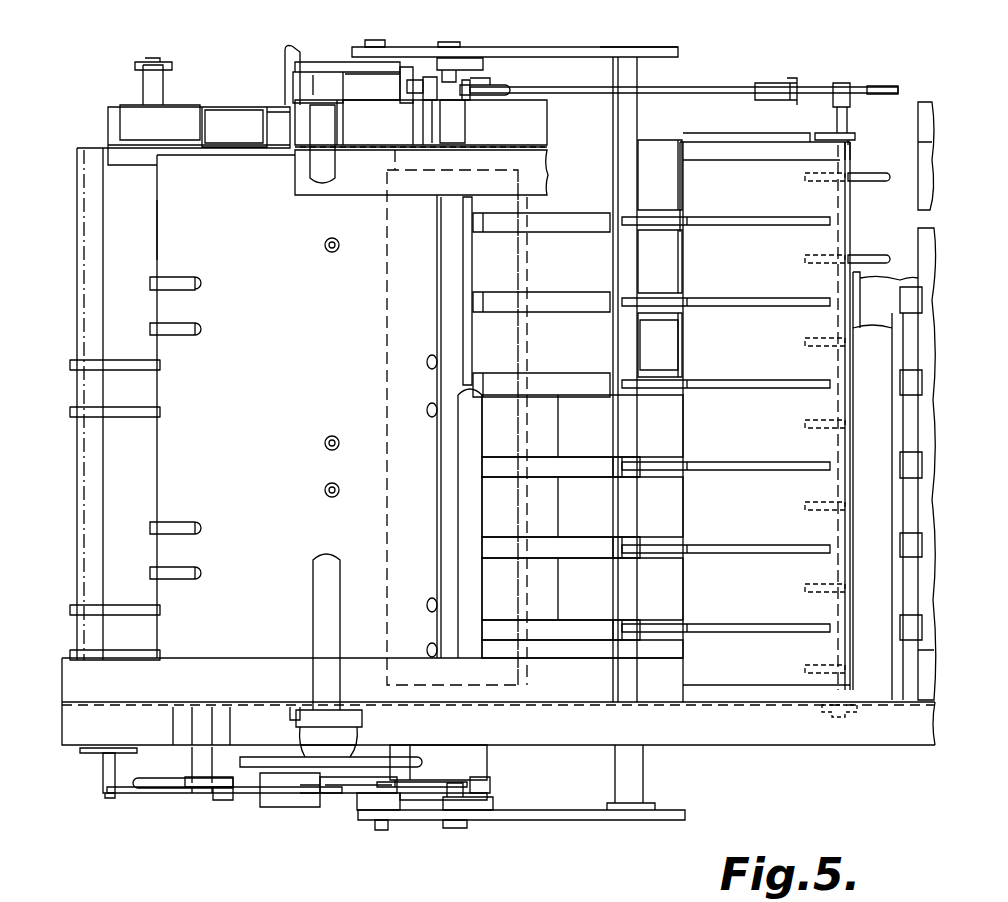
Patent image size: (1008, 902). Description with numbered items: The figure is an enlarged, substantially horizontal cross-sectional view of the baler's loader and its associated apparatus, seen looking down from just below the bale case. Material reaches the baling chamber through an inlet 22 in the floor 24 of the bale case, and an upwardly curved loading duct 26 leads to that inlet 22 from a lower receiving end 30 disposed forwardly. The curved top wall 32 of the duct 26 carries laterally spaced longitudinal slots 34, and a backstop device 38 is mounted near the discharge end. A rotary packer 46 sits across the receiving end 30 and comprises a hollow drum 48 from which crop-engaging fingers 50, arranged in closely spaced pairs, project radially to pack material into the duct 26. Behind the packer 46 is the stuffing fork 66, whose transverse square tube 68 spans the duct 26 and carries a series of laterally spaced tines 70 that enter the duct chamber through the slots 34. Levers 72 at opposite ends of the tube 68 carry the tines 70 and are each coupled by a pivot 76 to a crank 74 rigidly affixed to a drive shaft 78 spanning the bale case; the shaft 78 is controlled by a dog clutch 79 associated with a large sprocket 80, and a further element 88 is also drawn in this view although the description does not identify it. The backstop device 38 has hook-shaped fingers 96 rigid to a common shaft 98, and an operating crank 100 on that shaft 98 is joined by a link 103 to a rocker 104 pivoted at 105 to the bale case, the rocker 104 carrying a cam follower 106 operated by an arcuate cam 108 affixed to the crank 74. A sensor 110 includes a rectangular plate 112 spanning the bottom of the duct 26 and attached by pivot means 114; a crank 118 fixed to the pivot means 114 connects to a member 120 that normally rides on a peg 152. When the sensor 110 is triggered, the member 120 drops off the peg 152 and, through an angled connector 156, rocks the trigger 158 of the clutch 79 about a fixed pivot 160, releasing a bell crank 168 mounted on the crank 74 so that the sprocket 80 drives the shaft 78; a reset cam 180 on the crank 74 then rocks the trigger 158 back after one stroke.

The inlet 22 is at (765, 422).
The floor 24 is at (635, 505).
The loading duct 26 is at (736, 138).
The lower receiving end 30 is at (93, 492).
The curved top wall 32 is at (665, 345).
The longitudinal slots 34 is at (570, 305).
The auxiliary backstop device 38 is at (852, 140).
The rotary packer 46 is at (157, 227).
The hollow drum 48 is at (182, 462).
The crop-engaging fingers 50 is at (138, 412).
The stuffing fork 66 is at (612, 40).
The transverse square tube 68 is at (630, 260).
The tines 70 is at (753, 225).
The levers 72 is at (577, 47).
The crank 74 is at (328, 65).
The pivot 76 is at (375, 40).
The drive shaft 78 is at (336, 603).
The dog clutch 79 is at (252, 812).
The large sprocket 80 is at (273, 760).
The bolt 88 is at (448, 42).
The hook-shaped fingers 96 is at (870, 178).
The shaft 98 is at (836, 128).
The operating crank 100 is at (866, 87).
The link 103 is at (668, 87).
The rocker 104 is at (468, 88).
The pivot 105 is at (465, 103).
The cam follower 106 is at (405, 75).
The arcuate cam 108 is at (378, 97).
The sensor 110 is at (516, 361).
The rectangular plate 112 is at (387, 357).
The pivot means 114 is at (400, 752).
The crank 118 is at (433, 782).
The member 120 is at (427, 800).
The peg 152 is at (107, 798).
The angled connector 156 is at (152, 777).
The trigger 158 is at (210, 803).
The fixed pivot 160 is at (205, 795).
The bell crank 168 is at (357, 805).
The reset cam 180 is at (290, 790).